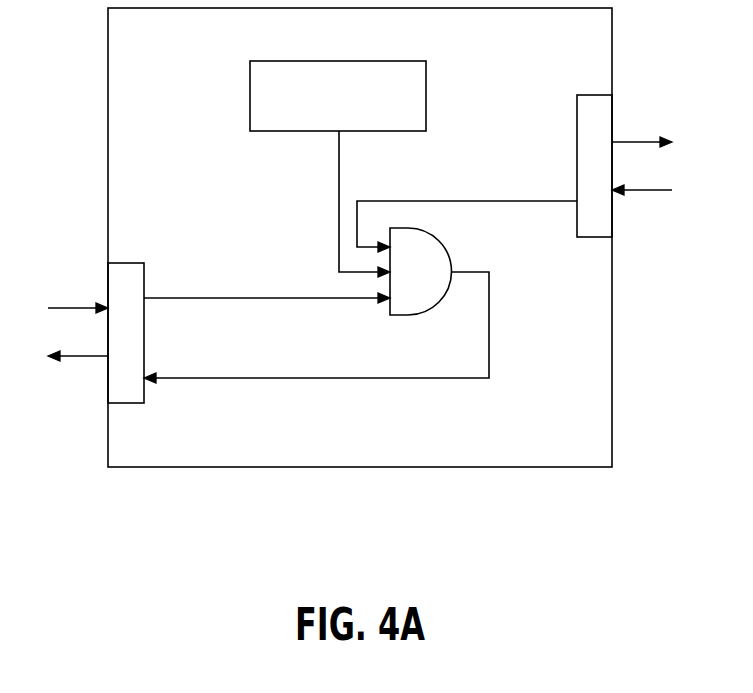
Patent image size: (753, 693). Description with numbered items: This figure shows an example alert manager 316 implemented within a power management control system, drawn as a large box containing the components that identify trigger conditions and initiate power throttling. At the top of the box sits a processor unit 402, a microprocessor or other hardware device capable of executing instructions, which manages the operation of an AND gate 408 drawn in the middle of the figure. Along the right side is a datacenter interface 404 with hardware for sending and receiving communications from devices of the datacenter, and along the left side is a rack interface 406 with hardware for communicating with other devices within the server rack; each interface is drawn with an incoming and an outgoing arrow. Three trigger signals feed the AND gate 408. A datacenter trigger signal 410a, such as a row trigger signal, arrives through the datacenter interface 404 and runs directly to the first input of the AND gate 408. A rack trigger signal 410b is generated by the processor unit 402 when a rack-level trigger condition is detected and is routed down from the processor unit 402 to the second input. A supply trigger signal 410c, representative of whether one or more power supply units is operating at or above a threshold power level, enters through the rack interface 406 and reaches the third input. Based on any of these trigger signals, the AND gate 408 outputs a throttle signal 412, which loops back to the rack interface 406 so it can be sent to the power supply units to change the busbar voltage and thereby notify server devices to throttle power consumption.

The alert manager 316 is at (360, 30).
The processor unit 402 is at (338, 96).
The datacenter interface 404 is at (577, 96).
The rack interface 406 is at (130, 263).
The AND gate 408 is at (449, 240).
The datacenter trigger signal 410a is at (474, 200).
The rack trigger signal 410b is at (339, 195).
The supply trigger signal 410c is at (240, 297).
The throttle signal 412 is at (347, 380).